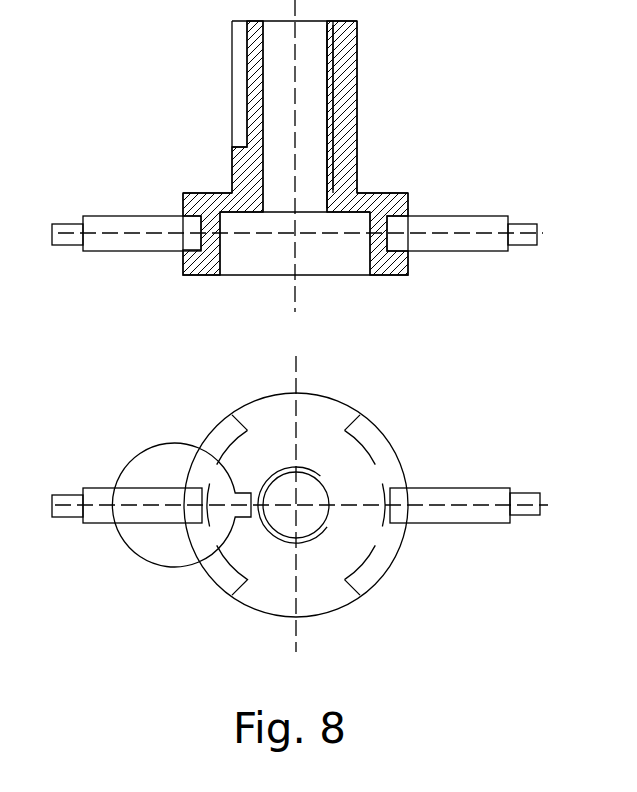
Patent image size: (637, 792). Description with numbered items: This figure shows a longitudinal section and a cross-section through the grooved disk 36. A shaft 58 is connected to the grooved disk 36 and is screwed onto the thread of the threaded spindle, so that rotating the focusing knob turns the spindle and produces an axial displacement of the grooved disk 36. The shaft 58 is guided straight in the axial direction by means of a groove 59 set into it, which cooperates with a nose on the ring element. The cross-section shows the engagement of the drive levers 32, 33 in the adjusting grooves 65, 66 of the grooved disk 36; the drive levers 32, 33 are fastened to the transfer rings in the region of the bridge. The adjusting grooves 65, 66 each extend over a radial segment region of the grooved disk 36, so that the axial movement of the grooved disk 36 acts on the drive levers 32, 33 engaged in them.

The drive lever 32 is at (113, 228).
The drive lever 33 is at (462, 227).
The grooved disk 36 is at (388, 274).
The shaft 58 is at (348, 112).
The groove 59 is at (240, 56).
The adjusting groove 65 is at (207, 446).
The adjusting groove 66 is at (387, 450).